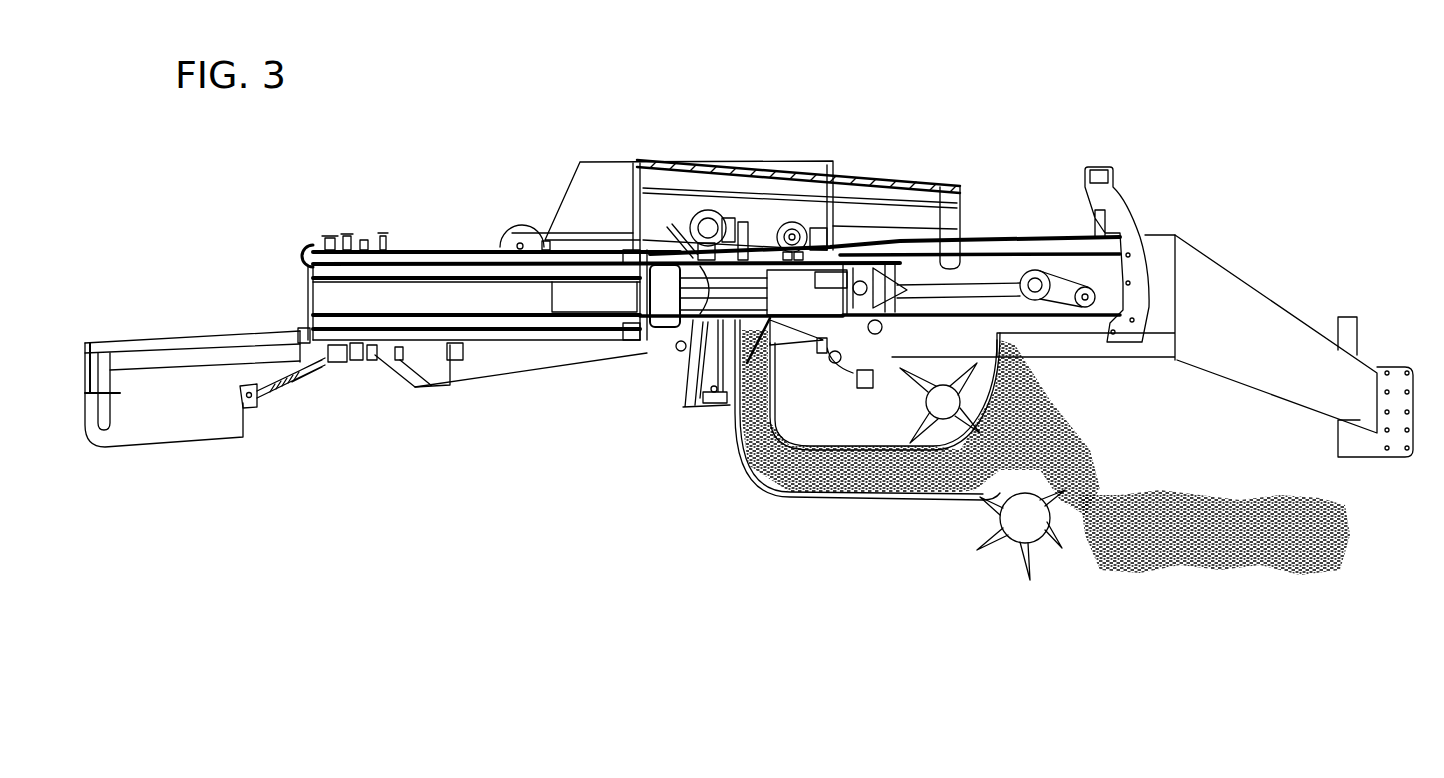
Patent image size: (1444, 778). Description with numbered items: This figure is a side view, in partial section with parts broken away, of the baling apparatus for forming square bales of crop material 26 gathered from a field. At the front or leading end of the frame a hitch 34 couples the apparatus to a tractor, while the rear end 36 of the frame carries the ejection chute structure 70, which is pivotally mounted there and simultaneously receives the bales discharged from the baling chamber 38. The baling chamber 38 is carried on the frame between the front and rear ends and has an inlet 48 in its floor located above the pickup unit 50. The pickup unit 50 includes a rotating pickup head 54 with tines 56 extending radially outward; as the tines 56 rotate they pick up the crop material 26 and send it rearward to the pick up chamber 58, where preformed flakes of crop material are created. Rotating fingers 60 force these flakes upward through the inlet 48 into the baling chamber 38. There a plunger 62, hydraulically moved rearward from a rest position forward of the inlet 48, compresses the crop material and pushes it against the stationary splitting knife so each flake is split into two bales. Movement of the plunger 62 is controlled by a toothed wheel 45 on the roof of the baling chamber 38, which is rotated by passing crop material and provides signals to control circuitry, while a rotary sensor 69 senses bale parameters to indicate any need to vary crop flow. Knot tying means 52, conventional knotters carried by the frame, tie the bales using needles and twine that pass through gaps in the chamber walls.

The crop material 26 is at (1177, 562).
The hitch 34 is at (1394, 365).
The rear end 36 is at (341, 352).
The baling chamber 38 is at (618, 309).
The toothed wheel 45 is at (806, 226).
The inlet 48 is at (770, 358).
The pickup unit 50 is at (1001, 541).
The knot tying means 52 is at (873, 176).
The pickup head 54 is at (1012, 541).
The tines 56 is at (1060, 541).
The pick up chamber 58 is at (938, 488).
The rotating fingers 60 is at (926, 403).
The plunger 62 is at (810, 309).
The rotary sensor 69 is at (305, 245).
The ejection chute structure 70 is at (217, 325).